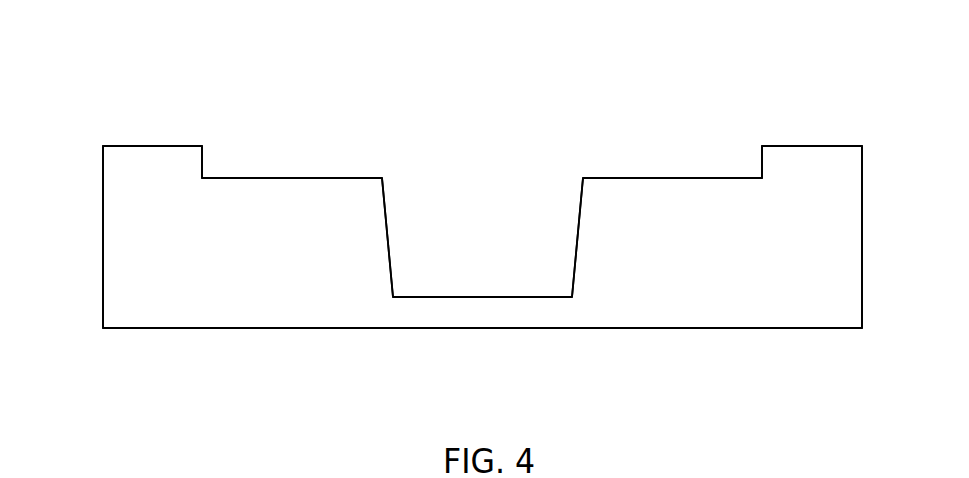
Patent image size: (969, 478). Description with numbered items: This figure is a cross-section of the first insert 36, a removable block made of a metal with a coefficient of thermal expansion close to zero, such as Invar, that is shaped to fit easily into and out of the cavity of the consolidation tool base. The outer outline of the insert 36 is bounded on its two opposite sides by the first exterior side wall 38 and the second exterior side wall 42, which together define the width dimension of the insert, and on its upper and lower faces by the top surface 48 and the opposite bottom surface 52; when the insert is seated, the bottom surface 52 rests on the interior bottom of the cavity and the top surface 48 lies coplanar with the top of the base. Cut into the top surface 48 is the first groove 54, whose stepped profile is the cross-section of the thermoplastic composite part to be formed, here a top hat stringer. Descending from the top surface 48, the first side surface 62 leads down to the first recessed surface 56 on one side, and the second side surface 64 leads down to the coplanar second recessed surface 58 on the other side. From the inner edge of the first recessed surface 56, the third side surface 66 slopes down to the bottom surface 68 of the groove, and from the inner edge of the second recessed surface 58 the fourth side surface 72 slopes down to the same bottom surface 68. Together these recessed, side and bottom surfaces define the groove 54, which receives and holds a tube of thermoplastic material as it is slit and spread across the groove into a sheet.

The first insert 36 is at (790, 142).
The first exterior side wall 38 is at (103, 247).
The second exterior side wall 42 is at (862, 238).
The top surface 48 is at (173, 145).
The bottom surface 52 is at (317, 329).
The first groove 54 is at (592, 72).
The first recessed surface 56 is at (362, 177).
The second recessed surface 58 is at (640, 177).
The first side surface 62 is at (203, 153).
The second side surface 64 is at (761, 155).
The third side surface 66 is at (389, 238).
The bottom surface of the groove 68 is at (512, 296).
The fourth side surface 72 is at (580, 213).